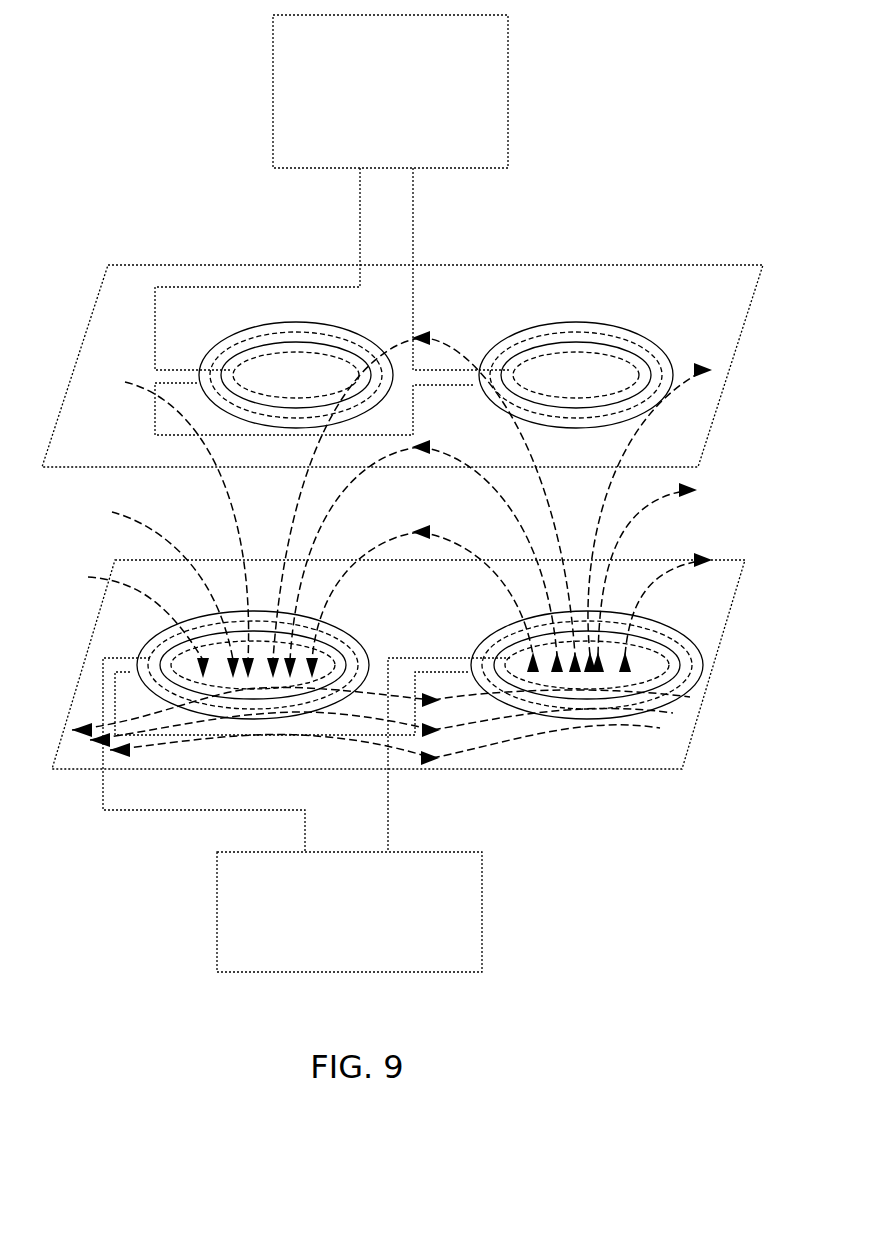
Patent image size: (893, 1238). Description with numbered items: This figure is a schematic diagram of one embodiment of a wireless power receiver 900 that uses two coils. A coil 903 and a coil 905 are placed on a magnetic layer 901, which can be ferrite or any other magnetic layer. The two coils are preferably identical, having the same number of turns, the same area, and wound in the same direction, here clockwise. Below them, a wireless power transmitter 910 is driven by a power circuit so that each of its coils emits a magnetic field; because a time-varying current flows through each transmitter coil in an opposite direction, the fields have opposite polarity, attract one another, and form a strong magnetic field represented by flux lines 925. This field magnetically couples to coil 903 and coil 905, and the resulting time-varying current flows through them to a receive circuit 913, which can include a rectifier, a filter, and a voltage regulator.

The wireless power receiver 900 is at (225, 215).
The magnetic layer 901 is at (603, 265).
The coil 903 is at (212, 350).
The coil 905 is at (512, 337).
The wireless power transmitter 910 is at (565, 805).
The receive circuit 913 is at (510, 133).
The flux lines 925 is at (426, 519).